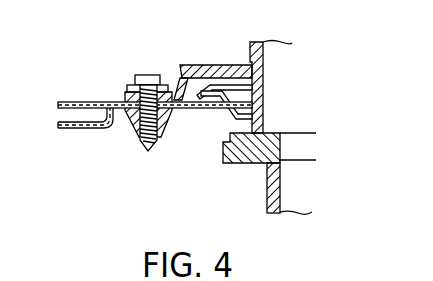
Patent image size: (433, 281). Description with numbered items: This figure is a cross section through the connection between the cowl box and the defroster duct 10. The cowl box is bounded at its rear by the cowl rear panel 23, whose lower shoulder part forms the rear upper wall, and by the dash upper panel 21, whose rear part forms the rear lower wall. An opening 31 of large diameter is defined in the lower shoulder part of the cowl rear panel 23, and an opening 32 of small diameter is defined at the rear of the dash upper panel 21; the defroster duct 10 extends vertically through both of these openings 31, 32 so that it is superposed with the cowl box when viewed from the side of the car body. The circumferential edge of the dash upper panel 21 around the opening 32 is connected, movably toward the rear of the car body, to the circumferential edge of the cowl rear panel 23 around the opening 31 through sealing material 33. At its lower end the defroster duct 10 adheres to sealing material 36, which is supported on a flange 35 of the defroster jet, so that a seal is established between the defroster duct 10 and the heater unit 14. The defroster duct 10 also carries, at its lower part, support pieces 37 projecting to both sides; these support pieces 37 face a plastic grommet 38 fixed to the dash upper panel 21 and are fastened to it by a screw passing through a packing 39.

The defroster duct 10 is at (250, 52).
The heater unit 14 is at (267, 200).
The dash upper panel 21 is at (73, 129).
The cowl rear panel 23 is at (63, 101).
The opening 31 is at (222, 90).
The opening 32 is at (232, 118).
The sealing material 33 is at (213, 66).
The flange 35 is at (232, 167).
The sealing material 36 is at (275, 131).
The support pieces 37 is at (178, 68).
The plastic grommet 38 is at (129, 128).
The packing 39 is at (122, 97).